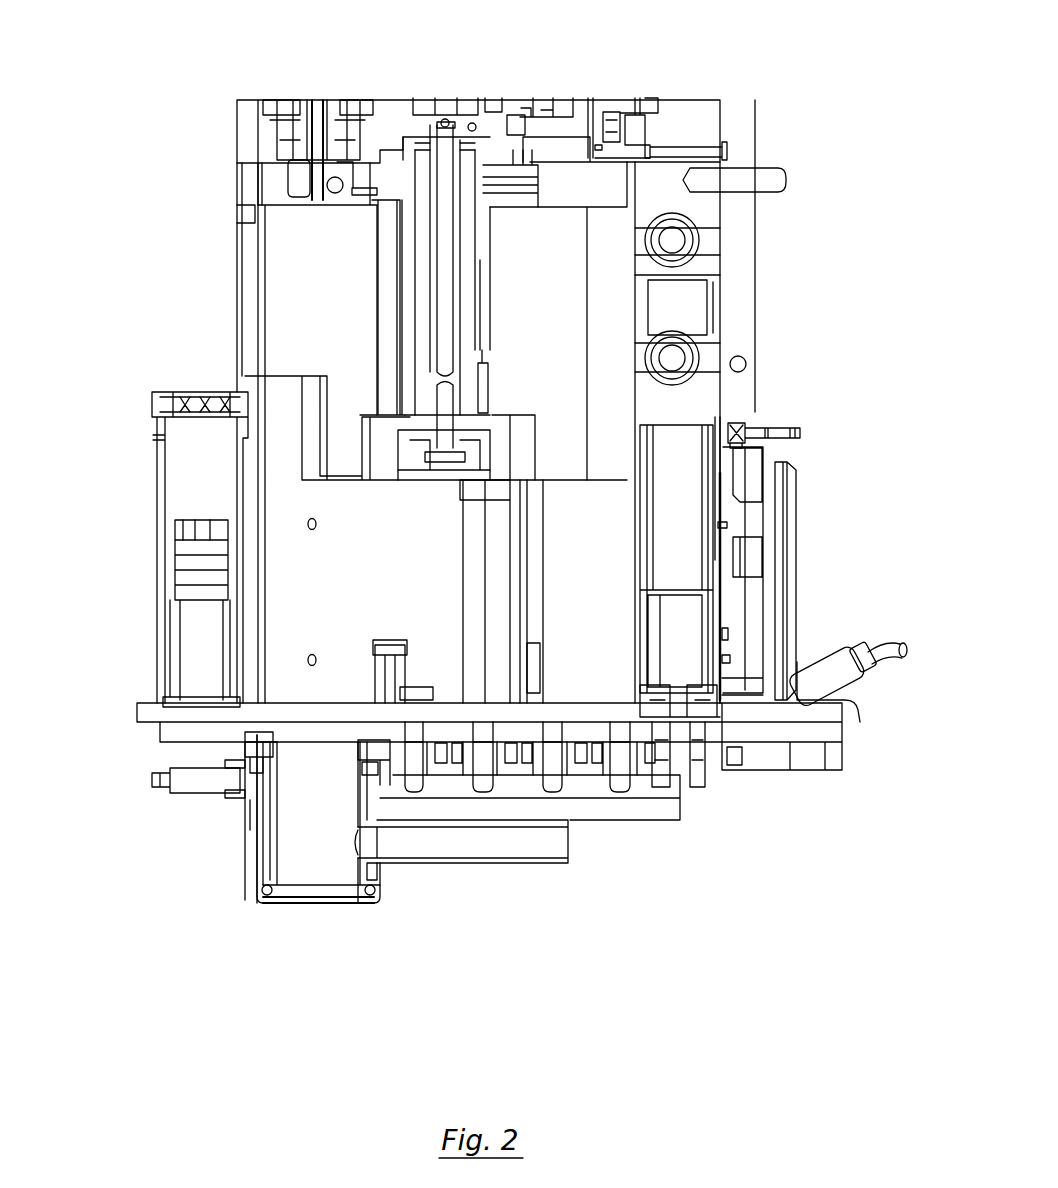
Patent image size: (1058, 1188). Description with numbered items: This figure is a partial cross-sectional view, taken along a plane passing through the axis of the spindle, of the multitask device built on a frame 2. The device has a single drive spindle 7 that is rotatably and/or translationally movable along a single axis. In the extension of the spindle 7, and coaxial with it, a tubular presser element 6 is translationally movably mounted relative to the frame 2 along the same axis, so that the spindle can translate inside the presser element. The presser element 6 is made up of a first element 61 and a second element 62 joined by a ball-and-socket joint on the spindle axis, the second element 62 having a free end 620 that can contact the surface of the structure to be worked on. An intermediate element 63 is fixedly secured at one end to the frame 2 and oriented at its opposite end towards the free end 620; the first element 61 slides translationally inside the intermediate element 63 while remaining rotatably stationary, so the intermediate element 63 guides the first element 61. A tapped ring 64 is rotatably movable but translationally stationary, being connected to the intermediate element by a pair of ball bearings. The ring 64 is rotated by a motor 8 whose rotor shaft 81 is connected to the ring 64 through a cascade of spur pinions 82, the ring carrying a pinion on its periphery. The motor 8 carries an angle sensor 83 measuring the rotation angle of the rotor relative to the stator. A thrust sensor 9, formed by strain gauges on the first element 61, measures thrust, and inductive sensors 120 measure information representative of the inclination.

The frame 2 is at (785, 582).
The presser element 6 is at (220, 878).
The drive spindle 7 is at (317, 100).
The motor 8 is at (690, 527).
The thrust sensor 9 is at (247, 832).
The first element 61 is at (273, 877).
The second element 62 is at (247, 852).
The intermediate element 63 is at (248, 900).
The ring 64 is at (233, 807).
The shaft 81 is at (673, 720).
The spur pinions 82 is at (383, 785).
The angle sensor 83 is at (682, 413).
The inductive sensors 120 is at (187, 785).
The free end 620 is at (370, 907).